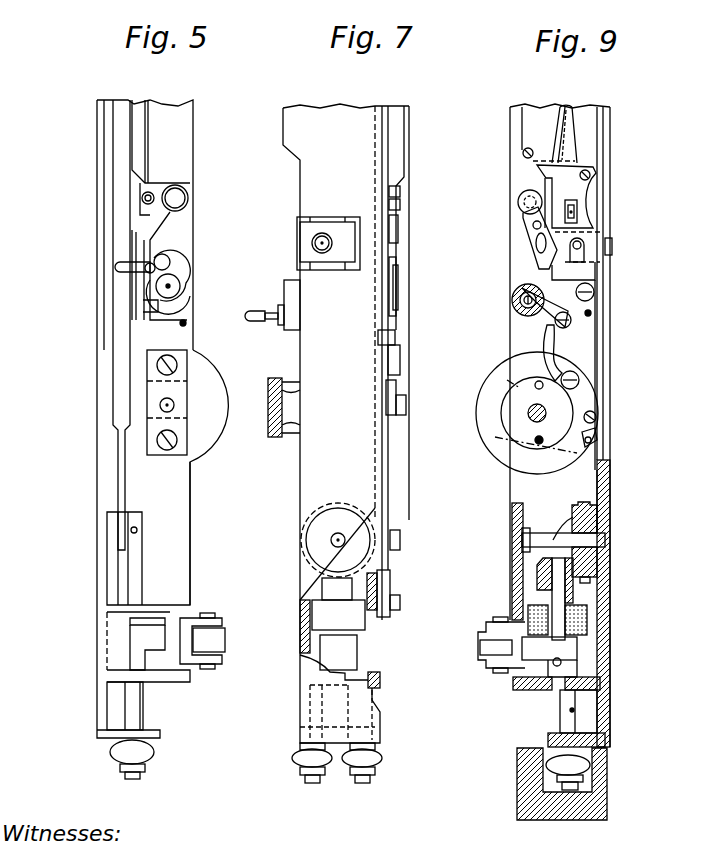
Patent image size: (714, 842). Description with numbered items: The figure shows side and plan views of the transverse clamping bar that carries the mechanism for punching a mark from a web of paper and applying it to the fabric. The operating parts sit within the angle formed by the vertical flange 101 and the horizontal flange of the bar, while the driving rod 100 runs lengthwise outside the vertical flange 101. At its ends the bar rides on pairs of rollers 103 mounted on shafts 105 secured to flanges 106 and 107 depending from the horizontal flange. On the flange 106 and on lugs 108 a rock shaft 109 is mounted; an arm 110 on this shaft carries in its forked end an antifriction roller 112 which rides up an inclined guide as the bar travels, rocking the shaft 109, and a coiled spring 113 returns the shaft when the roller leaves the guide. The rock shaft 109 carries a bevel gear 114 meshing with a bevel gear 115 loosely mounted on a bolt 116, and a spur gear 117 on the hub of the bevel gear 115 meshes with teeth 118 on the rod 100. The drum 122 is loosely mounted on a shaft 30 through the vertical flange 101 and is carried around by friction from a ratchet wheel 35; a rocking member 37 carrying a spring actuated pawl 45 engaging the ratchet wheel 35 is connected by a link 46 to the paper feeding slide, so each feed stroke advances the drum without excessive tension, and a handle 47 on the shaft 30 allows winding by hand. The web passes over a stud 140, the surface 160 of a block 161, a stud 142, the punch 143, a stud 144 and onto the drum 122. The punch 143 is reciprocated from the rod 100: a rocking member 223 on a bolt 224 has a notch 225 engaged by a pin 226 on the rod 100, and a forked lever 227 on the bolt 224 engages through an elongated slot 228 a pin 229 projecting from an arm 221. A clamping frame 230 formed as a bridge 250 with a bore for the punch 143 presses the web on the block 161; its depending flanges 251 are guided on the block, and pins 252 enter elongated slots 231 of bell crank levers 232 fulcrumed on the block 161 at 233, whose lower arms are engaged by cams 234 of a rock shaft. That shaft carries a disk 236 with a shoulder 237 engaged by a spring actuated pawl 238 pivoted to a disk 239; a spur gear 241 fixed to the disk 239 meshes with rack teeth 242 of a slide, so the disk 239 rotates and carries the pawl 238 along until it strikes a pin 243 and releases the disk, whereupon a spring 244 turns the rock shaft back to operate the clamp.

In FIG. 9, the shaft 30 is at (530, 410).
In FIG. 9, the ratchet wheel 35 is at (512, 447).
In FIG. 9, the rocking member 37 is at (508, 468).
In FIG. 9, the spring actuated pawl 45 is at (597, 426).
In FIG. 9, the link 46 is at (553, 348).
In FIG. 7, the handle 47 is at (268, 405).
In FIG. 5, the rod 100 is at (172, 347).
In FIG. 7, the rod 100 is at (383, 497).
In FIG. 5, the vertical flange 101 is at (172, 491).
In FIG. 5, the rollers 103 is at (156, 753).
In FIG. 7, the rollers 103 is at (372, 765).
In FIG. 9, the rollers 103 is at (575, 770).
In FIG. 5, the shafts 105 is at (130, 709).
In FIG. 9, the shafts 105 is at (570, 727).
In FIG. 9, the flange 106 is at (512, 684).
In FIG. 9, the flange 107 is at (548, 740).
In FIG. 9, the lugs 108 is at (576, 583).
In FIG. 9, the rock shaft 109 is at (560, 603).
In FIG. 9, the arm 110 is at (592, 652).
In FIG. 5, the antifriction roller 112 is at (214, 648).
In FIG. 9, the antifriction roller 112 is at (482, 648).
In FIG. 9, the coiled spring 113 is at (632, 635).
In FIG. 9, the bevel gear 114 is at (608, 566).
In FIG. 9, the bevel gear 115 is at (607, 534).
In FIG. 9, the bolt 116 is at (604, 505).
In FIG. 9, the spur gear 117 is at (606, 493).
In FIG. 7, the teeth 118 is at (378, 470).
In FIG. 9, the drum 122 is at (583, 397).
In FIG. 9, the stud 140 is at (522, 155).
In FIG. 9, the stud 142 is at (591, 176).
In FIG. 9, the punch 143 is at (613, 258).
In FIG. 9, the stud 144 is at (597, 322).
In FIG. 9, the surface 160 is at (572, 166).
In FIG. 9, the block 161 is at (581, 193).
In FIG. 9, the arm 221 is at (531, 226).
In FIG. 5, the rocking member 223 is at (166, 213).
In FIG. 5, the bolt 224 is at (189, 198).
In FIG. 9, the bolt 224 is at (518, 205).
In FIG. 5, the notch 225 is at (145, 205).
In FIG. 5, the pin 226 is at (141, 198).
In FIG. 9, the forked lever 227 is at (536, 243).
In FIG. 9, the elongated slot 228 is at (549, 263).
In FIG. 9, the pin 229 is at (519, 286).
In FIG. 9, the clamping frame 230 is at (593, 228).
In FIG. 9, the elongated slots 231 is at (599, 261).
In FIG. 9, the bell crank levers 232 is at (580, 278).
In FIG. 9, the fulcrum 233 is at (592, 315).
In FIG. 9, the cams 234 is at (542, 302).
In FIG. 5, the disk 236 is at (190, 302).
In FIG. 5, the shoulder 237 is at (150, 285).
In FIG. 5, the spring actuated pawl 238 is at (116, 268).
In FIG. 5, the disk 239 is at (181, 255).
In FIG. 5, the spur gear 241 is at (185, 292).
In FIG. 5, the rack teeth 242 is at (142, 308).
In FIG. 5, the pin 243 is at (187, 325).
In FIG. 9, the spring 244 is at (513, 305).
In FIG. 9, the bridge 250 is at (604, 233).
In FIG. 9, the depending flanges 251 is at (532, 300).
In FIG. 9, the pins 252 is at (586, 248).